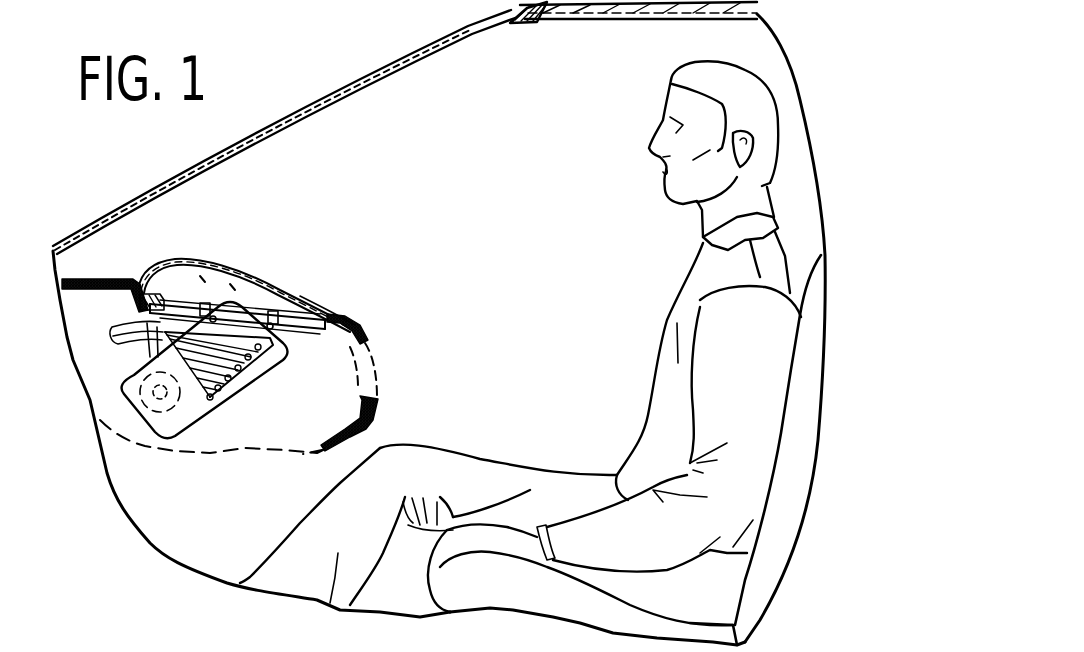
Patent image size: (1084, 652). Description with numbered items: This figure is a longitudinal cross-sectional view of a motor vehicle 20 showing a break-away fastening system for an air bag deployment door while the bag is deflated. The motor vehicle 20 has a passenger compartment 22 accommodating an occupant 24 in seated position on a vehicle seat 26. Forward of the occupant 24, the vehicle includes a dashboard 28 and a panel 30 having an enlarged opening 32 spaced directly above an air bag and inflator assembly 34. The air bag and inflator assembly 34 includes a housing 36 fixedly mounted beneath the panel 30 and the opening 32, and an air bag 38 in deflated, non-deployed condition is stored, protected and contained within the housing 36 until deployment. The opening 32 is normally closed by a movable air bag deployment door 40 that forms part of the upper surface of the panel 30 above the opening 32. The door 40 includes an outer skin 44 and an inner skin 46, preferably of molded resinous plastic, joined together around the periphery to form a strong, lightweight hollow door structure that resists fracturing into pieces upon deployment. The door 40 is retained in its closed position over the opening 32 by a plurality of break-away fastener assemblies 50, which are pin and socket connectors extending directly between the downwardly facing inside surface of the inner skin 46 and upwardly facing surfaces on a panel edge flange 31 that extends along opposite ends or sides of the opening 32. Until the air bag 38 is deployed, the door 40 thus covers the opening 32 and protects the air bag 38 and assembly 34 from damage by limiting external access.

The motor vehicle 20 is at (152, 166).
The passenger compartment 22 is at (535, 172).
The occupant 24 is at (772, 383).
The vehicle seat 26 is at (495, 587).
The dashboard 28 is at (381, 390).
The panel 30 is at (118, 262).
The panel edge flange 31 is at (254, 312).
The opening 32 is at (142, 286).
The air bag and inflator assembly 34 is at (229, 397).
The housing 36 is at (238, 370).
The air bag 38 is at (215, 365).
The air bag deployment door 40 is at (273, 277).
The outer skin 44 is at (311, 317).
The inner skin 46 is at (223, 312).
The break-away fastener assemblies 50 is at (208, 295).